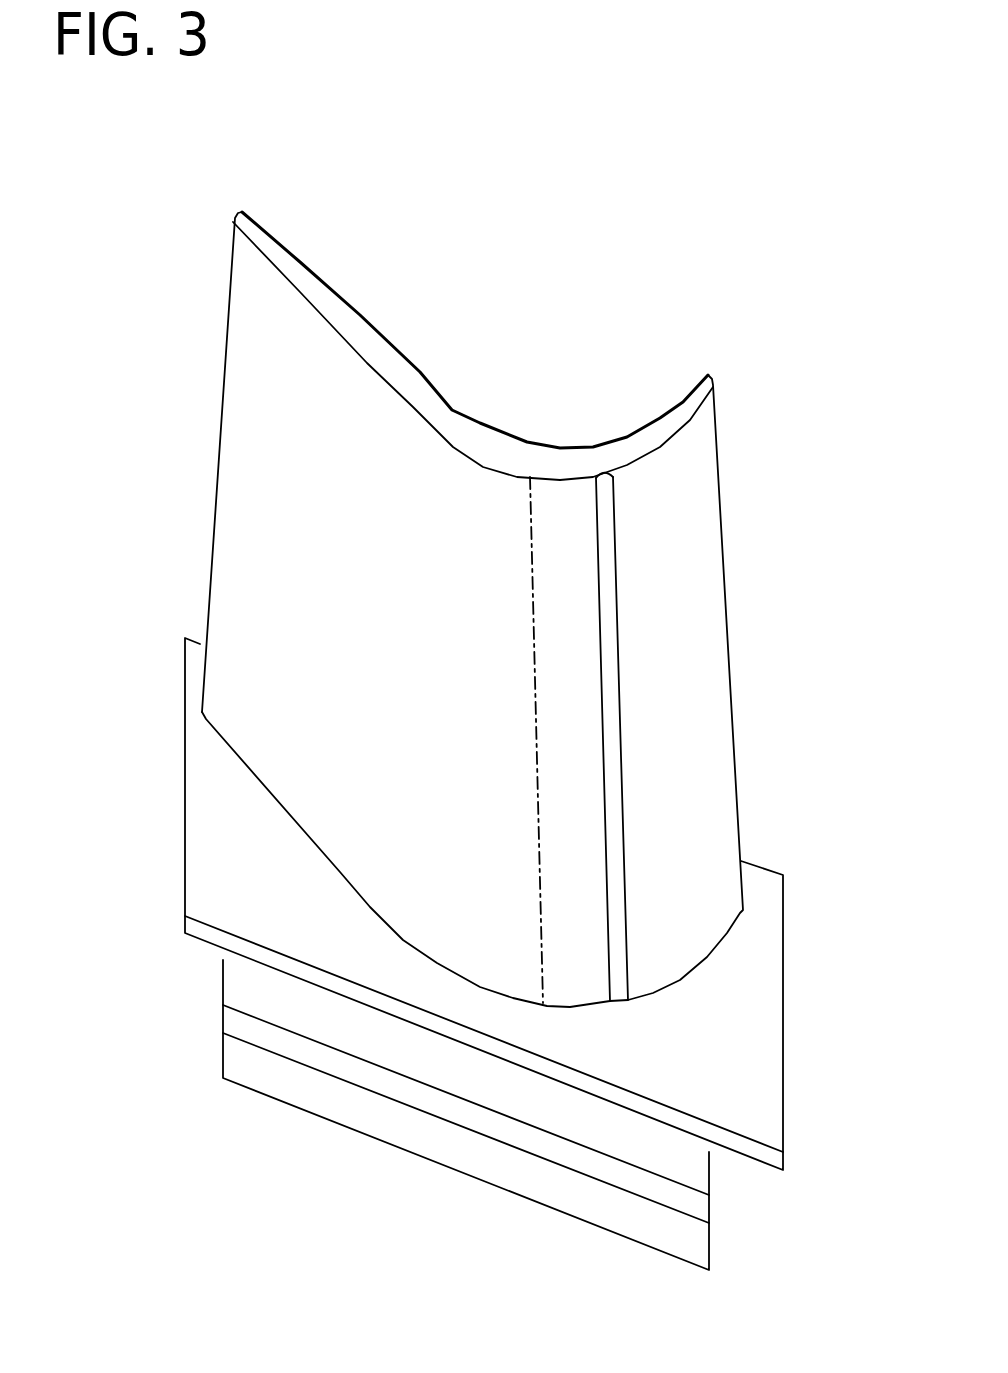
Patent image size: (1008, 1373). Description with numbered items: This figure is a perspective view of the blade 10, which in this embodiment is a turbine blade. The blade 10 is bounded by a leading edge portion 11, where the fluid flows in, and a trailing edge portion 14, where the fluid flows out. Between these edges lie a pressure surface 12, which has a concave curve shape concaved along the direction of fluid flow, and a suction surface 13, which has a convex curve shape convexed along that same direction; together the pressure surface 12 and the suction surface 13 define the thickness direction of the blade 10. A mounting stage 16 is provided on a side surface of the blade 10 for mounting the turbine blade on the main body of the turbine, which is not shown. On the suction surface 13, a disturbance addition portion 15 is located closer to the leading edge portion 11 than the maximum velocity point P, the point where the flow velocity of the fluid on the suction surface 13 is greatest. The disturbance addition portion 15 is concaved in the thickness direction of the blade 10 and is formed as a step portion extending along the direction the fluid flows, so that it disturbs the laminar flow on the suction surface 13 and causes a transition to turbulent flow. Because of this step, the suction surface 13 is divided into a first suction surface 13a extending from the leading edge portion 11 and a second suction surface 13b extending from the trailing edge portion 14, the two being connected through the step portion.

The blade 10 is at (907, 270).
The leading edge portion 11 is at (723, 542).
The pressure surface 12 is at (590, 447).
The suction surface 13 is at (687, 297).
The first suction surface 13a is at (673, 480).
The second suction surface 13b is at (473, 493).
The trailing edge portion 14 is at (225, 355).
The disturbance addition portion 15 is at (603, 507).
The mounting stage 16 is at (783, 978).
The maximum velocity point P is at (530, 713).